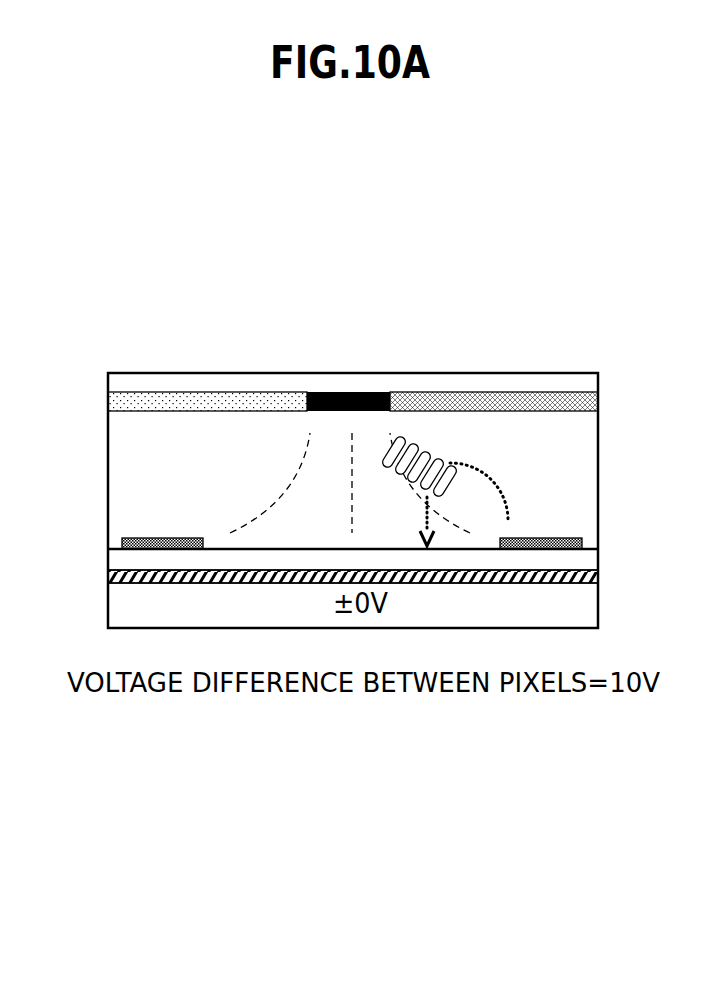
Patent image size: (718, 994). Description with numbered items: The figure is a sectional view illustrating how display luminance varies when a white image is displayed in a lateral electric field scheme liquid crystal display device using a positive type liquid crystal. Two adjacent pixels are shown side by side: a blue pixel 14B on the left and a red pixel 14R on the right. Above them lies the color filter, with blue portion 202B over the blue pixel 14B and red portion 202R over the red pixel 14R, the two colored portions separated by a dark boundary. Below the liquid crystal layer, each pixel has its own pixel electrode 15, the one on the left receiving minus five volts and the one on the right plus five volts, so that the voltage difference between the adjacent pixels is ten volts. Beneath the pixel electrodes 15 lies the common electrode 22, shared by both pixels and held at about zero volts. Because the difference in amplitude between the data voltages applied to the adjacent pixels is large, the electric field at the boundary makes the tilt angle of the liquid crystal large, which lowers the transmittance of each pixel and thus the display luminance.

The blue pixel 14B is at (349, 306).
The red pixel 14R is at (597, 306).
The blue portion 202B is at (217, 403).
The red portion 202R is at (503, 403).
The pixel electrode 15 is at (598, 549).
The common electrode 22 is at (598, 579).